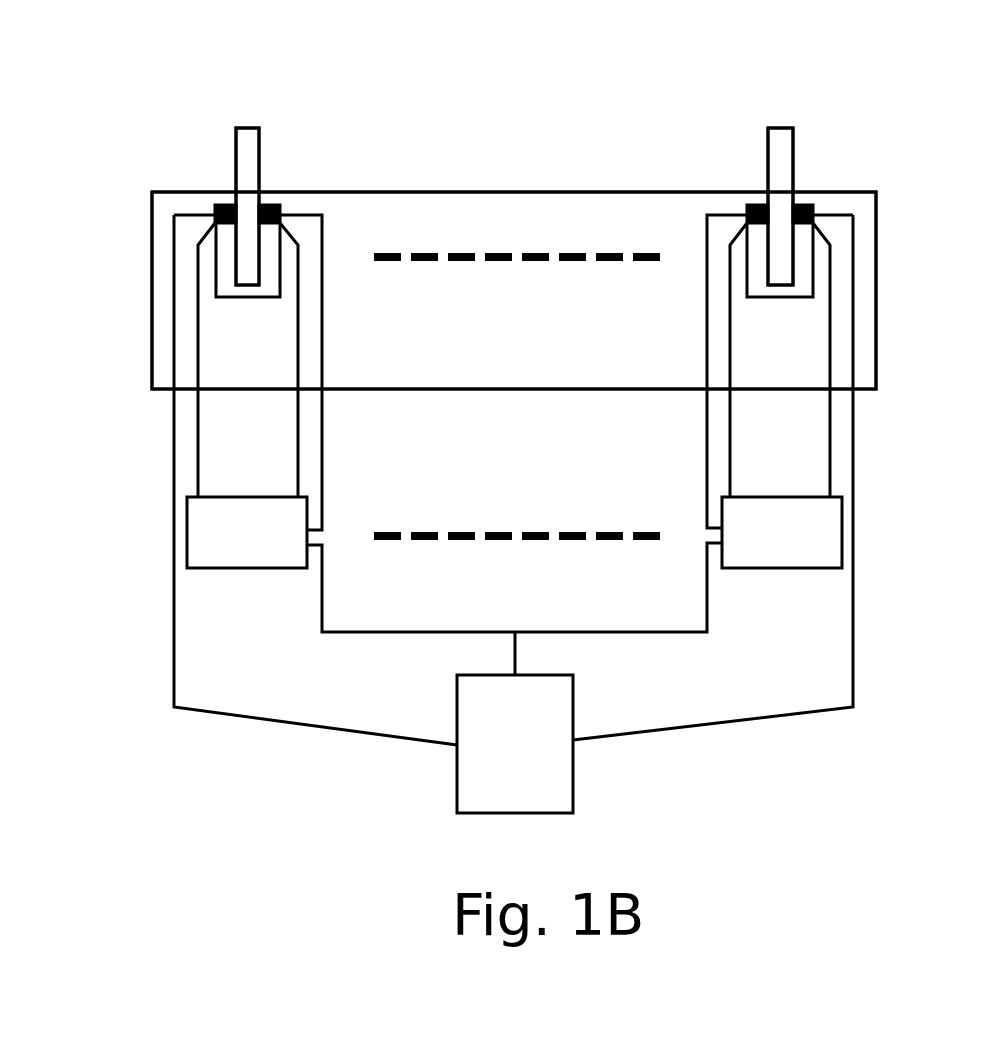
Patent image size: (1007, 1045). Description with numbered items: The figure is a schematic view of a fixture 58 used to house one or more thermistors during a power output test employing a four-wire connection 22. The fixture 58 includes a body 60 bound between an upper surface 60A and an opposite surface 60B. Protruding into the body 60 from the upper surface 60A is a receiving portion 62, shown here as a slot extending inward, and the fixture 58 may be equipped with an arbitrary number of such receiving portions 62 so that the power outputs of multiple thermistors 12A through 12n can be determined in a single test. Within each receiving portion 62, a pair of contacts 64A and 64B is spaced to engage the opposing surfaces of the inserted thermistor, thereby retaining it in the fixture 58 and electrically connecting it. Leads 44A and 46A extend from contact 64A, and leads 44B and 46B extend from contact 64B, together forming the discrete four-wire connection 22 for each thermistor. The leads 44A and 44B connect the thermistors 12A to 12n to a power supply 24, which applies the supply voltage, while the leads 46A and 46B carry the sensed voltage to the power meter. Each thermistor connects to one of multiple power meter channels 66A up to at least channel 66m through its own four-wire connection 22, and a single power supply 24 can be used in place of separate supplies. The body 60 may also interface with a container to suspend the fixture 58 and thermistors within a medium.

The fixture 58 is at (957, 112).
The body 60 is at (465, 230).
The upper surface 60A is at (553, 192).
The surface 60B is at (570, 390).
The receiving portion 62 is at (182, 157).
The thermistor 12A is at (246, 160).
The thermistor 12n is at (778, 147).
The contact 64A is at (218, 200).
The contact 64B is at (268, 200).
The lead 44A is at (174, 338).
The lead 44B is at (322, 348).
The lead 46A is at (198, 375).
The lead 46B is at (298, 410).
The four-wire connection 22 is at (148, 477).
The channel 66A is at (247, 532).
The channel 66m is at (782, 532).
The power supply 24 is at (515, 722).